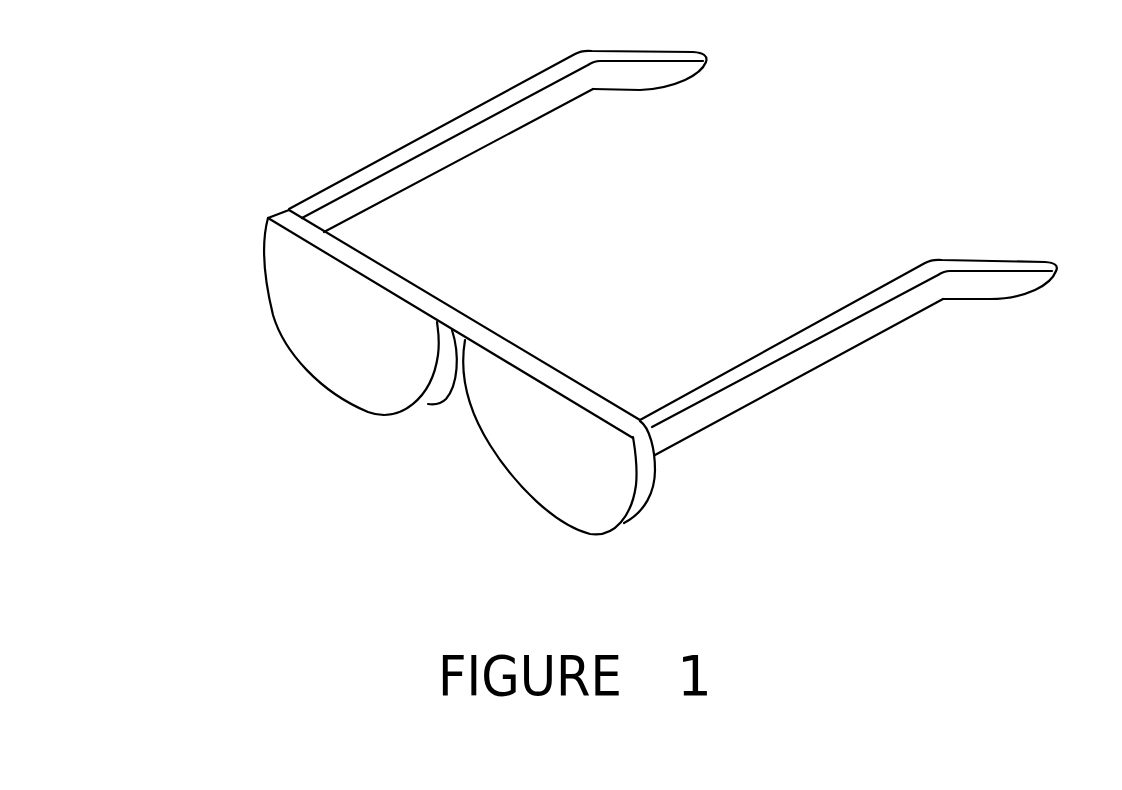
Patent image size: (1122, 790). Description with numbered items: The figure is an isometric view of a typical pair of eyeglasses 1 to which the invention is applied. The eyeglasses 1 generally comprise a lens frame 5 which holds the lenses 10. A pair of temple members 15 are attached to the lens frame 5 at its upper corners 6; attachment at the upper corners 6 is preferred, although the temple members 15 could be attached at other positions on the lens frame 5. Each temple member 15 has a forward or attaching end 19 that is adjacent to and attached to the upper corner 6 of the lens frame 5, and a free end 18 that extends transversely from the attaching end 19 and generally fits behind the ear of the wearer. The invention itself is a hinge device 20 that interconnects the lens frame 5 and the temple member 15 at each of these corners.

The eyeglasses 1 is at (600, 255).
The lens frame 5 is at (395, 281).
The upper corners 6 is at (290, 225).
The lenses 10 is at (337, 395).
The temple members 15 is at (438, 135).
The free end 18 is at (998, 300).
The attaching end 19 is at (738, 412).
The hinge device 20 is at (247, 183).